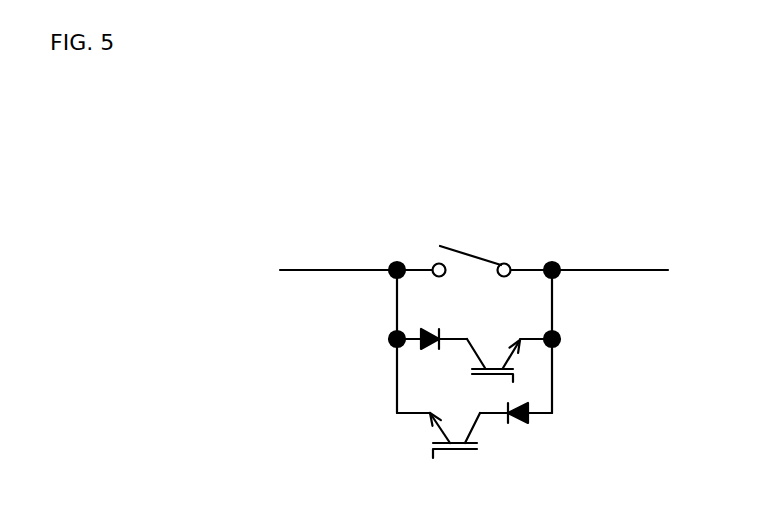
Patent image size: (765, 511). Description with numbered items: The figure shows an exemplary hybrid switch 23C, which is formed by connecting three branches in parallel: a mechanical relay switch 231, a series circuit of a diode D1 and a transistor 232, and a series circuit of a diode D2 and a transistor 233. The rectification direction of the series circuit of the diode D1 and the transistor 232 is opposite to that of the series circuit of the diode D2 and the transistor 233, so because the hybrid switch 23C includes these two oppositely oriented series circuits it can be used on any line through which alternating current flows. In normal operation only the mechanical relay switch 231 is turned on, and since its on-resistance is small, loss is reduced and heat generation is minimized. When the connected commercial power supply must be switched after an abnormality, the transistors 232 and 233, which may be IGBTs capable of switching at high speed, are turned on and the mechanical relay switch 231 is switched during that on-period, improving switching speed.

The hybrid switch 23C is at (375, 203).
The mechanical relay switch 231 is at (486, 253).
The transistor 232 is at (499, 345).
The transistor 233 is at (454, 421).
The diode D1 is at (435, 326).
The diode D2 is at (535, 425).